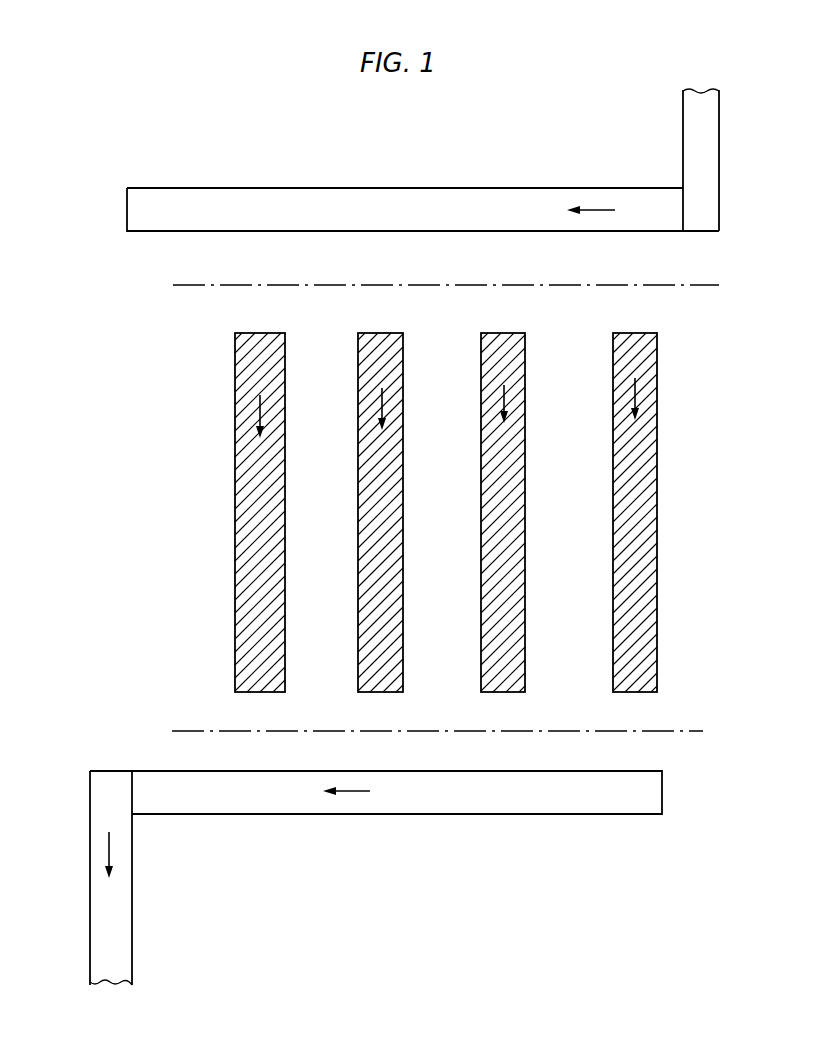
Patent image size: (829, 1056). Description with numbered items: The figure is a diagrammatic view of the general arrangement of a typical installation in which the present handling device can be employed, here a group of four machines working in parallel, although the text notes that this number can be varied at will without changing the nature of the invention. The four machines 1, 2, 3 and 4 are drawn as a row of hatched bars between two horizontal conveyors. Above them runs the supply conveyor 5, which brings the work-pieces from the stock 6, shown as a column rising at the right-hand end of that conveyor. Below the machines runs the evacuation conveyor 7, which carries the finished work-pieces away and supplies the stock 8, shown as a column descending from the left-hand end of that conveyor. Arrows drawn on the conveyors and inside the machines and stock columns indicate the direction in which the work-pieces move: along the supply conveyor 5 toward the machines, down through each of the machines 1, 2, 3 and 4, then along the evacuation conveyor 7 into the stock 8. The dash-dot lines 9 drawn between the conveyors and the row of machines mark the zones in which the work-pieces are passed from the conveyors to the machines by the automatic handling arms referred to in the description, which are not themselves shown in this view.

The machine 1 is at (628, 550).
The machine 2 is at (498, 552).
The machine 3 is at (375, 552).
The machine 4 is at (243, 552).
The supply conveyor 5 is at (500, 193).
The stock 6 is at (688, 130).
The evacuation conveyor 7 is at (375, 805).
The stock 8 is at (118, 890).
The section plane (dash-dot line) 9 is at (666, 285).